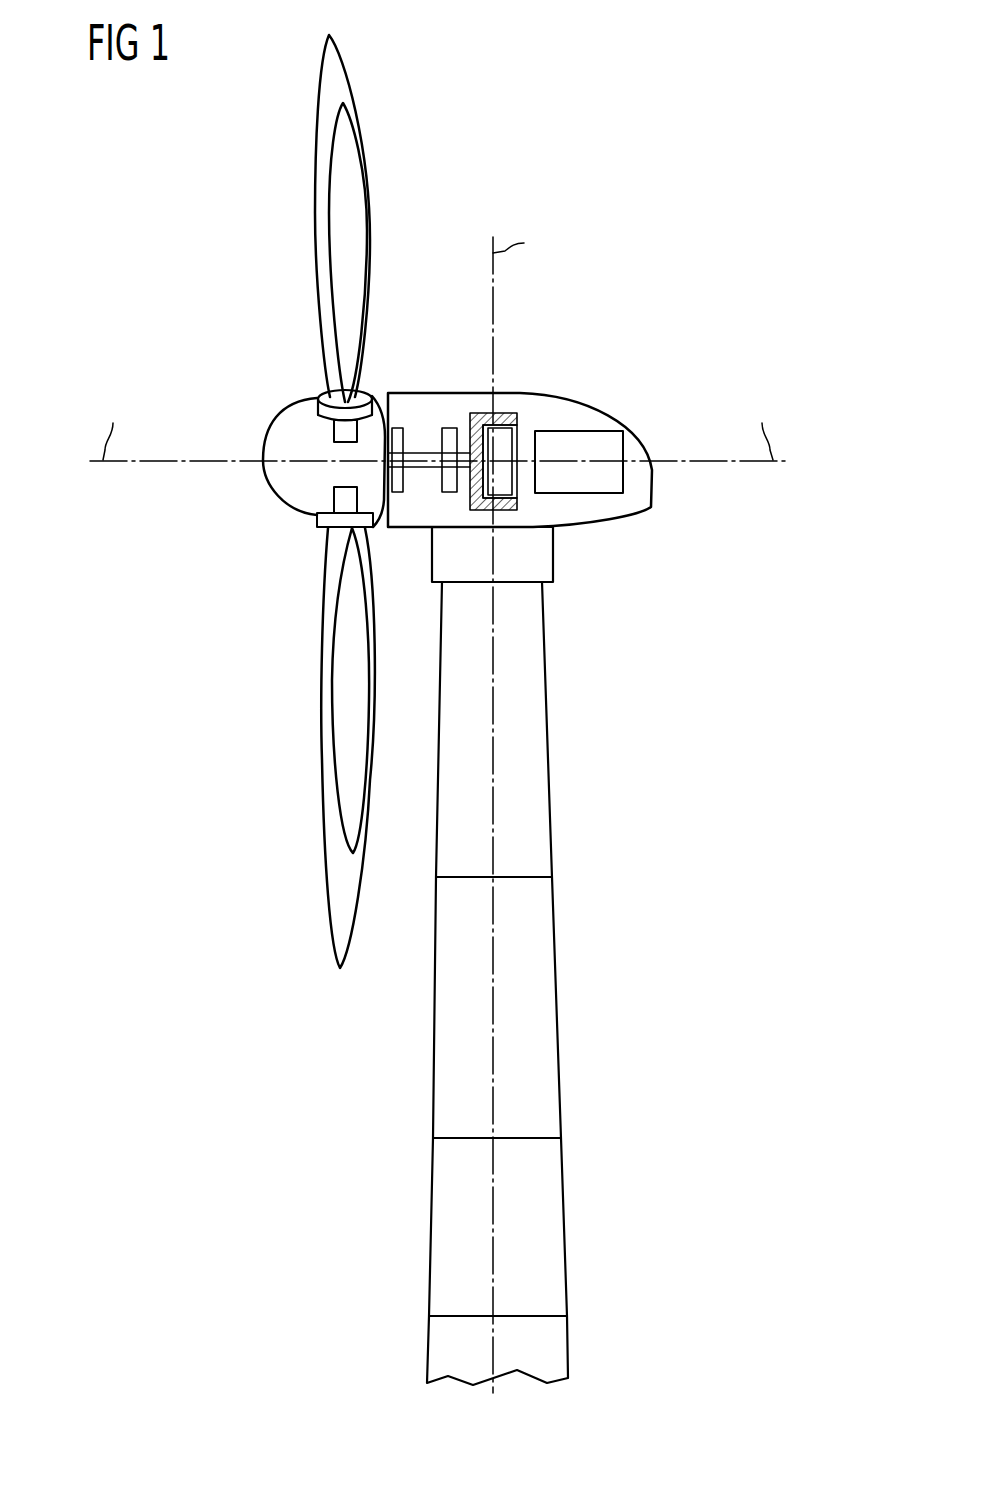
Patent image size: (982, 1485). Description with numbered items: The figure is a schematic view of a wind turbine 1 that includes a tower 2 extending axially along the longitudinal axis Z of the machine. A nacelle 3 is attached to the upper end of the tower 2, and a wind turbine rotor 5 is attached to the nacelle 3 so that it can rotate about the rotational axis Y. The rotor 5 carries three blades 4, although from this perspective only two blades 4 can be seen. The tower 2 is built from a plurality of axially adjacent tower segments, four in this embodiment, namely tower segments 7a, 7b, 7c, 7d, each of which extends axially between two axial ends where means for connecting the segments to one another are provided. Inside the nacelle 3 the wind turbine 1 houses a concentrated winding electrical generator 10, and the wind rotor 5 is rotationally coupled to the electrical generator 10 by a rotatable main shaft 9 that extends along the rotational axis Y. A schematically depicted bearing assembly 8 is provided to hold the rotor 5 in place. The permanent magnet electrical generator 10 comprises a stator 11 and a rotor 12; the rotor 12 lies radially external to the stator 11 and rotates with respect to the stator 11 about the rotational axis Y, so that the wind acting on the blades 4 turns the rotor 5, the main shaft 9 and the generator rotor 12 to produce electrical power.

The wind turbine 1 is at (677, 221).
The tower 2 is at (547, 682).
The nacelle 3 is at (600, 408).
The blades 4 is at (325, 197).
The wind turbine rotor 5 is at (266, 484).
The tower segment 7a is at (558, 1345).
The tower segment 7b is at (557, 1220).
The tower segment 7c is at (545, 1027).
The tower segment 7d is at (543, 775).
The bearing assembly 8 is at (449, 430).
The rotatable main shaft 9 is at (432, 466).
The electrical generator 10 is at (517, 410).
The stator 11 is at (513, 438).
The rotor 12 is at (497, 413).